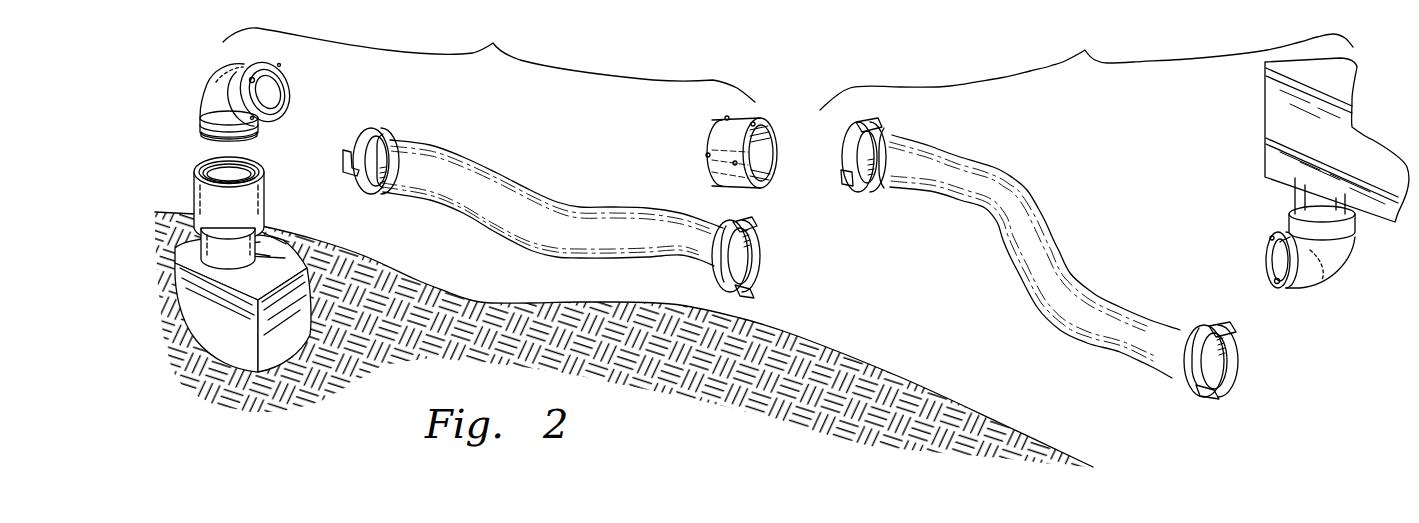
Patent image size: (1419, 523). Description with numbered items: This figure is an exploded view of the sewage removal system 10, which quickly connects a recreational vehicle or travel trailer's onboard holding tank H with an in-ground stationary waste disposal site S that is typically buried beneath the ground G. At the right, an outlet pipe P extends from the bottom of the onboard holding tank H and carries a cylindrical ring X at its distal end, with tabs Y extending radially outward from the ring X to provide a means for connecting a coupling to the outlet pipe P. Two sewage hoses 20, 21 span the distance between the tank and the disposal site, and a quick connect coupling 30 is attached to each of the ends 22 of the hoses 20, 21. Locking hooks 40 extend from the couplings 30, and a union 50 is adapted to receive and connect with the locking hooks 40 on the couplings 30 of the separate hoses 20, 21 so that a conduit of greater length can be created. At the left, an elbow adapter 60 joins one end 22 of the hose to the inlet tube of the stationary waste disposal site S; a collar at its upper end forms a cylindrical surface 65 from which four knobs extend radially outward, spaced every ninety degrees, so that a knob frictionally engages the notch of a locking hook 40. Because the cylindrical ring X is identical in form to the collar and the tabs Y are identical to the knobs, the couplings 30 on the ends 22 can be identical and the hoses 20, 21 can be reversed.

The sewage removal system 10 is at (1261, 400).
The sewage hose 20 is at (490, 168).
The sewage hose 21 is at (995, 162).
The hose end 22 is at (378, 196).
The quick connect coupling 30 is at (382, 132).
The locking hook 40 is at (342, 157).
The union 50 is at (733, 185).
The elbow adapter 60 is at (233, 90).
The cylindrical surface 65 is at (259, 85).
The ground G is at (813, 338).
The stationary waste disposal site S is at (228, 352).
The onboard holding tank H is at (1272, 120).
The outlet pipe P is at (1310, 203).
The cylindrical ring X is at (1270, 250).
The tab Y is at (1279, 285).